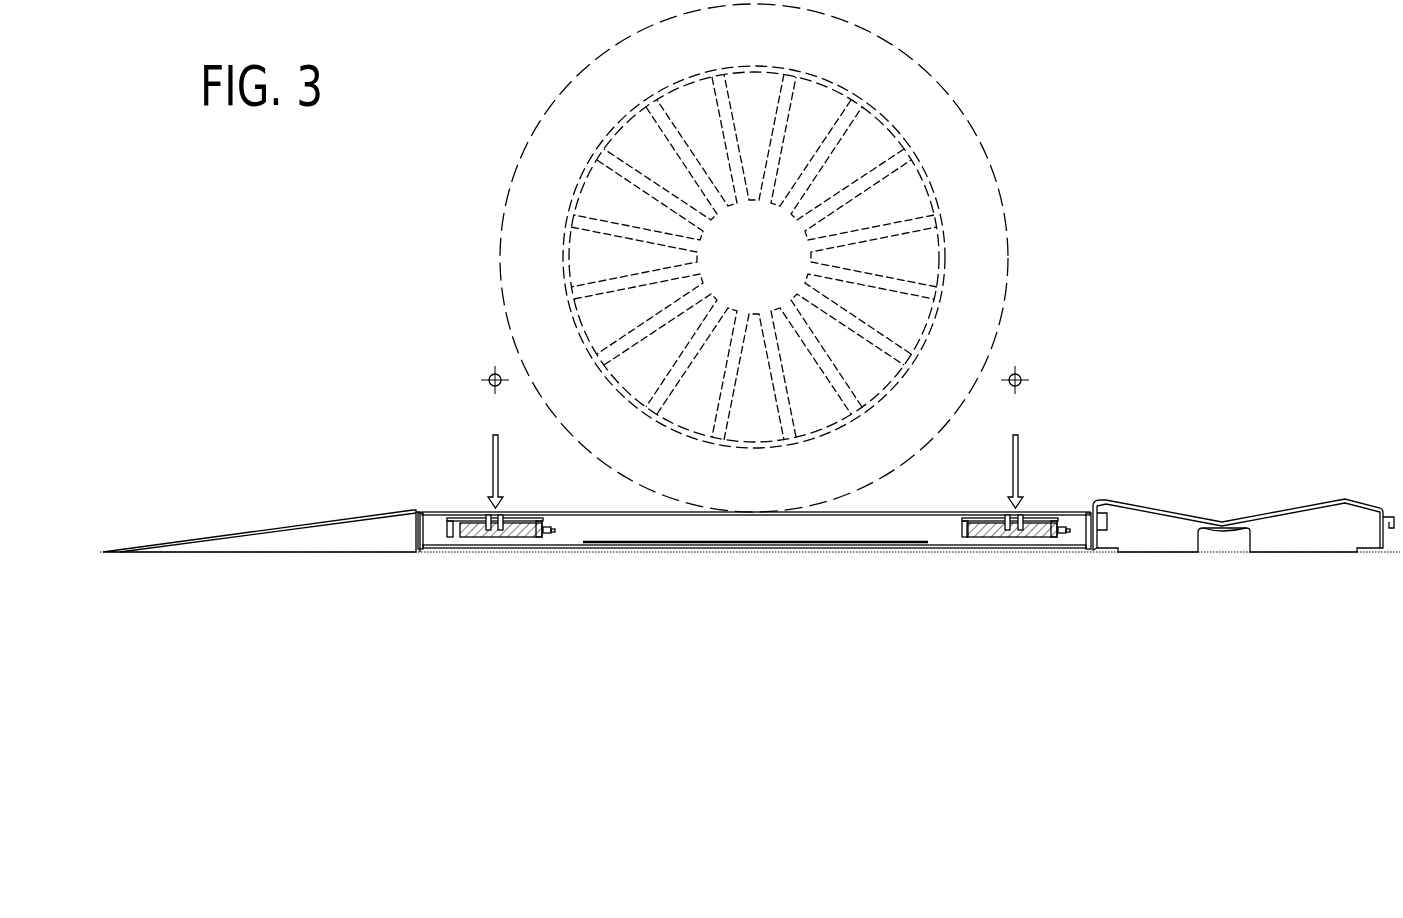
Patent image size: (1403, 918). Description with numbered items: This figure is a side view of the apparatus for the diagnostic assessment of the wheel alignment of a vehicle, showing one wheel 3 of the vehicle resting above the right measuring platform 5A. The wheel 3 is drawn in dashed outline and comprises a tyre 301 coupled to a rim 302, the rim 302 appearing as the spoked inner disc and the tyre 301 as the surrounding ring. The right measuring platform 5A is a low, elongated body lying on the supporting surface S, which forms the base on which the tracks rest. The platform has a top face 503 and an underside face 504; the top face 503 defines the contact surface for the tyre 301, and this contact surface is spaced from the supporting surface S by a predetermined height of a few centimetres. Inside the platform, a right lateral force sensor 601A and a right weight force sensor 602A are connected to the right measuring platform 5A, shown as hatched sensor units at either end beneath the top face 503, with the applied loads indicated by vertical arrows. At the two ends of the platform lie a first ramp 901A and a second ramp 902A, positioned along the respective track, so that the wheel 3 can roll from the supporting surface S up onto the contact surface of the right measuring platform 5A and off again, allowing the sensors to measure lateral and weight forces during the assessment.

The wheel 3 is at (1003, 129).
The tyre 301 is at (993, 308).
The rim 302 is at (755, 254).
The right measuring platform 5A is at (677, 563).
The underside face 504 is at (786, 516).
The top face 503 is at (907, 513).
The right lateral force sensor 601A is at (487, 551).
The right weight force sensor 602A is at (1018, 551).
The first ramp 901A is at (1157, 528).
The second ramp 902A is at (358, 516).
The supporting surface S is at (103, 552).